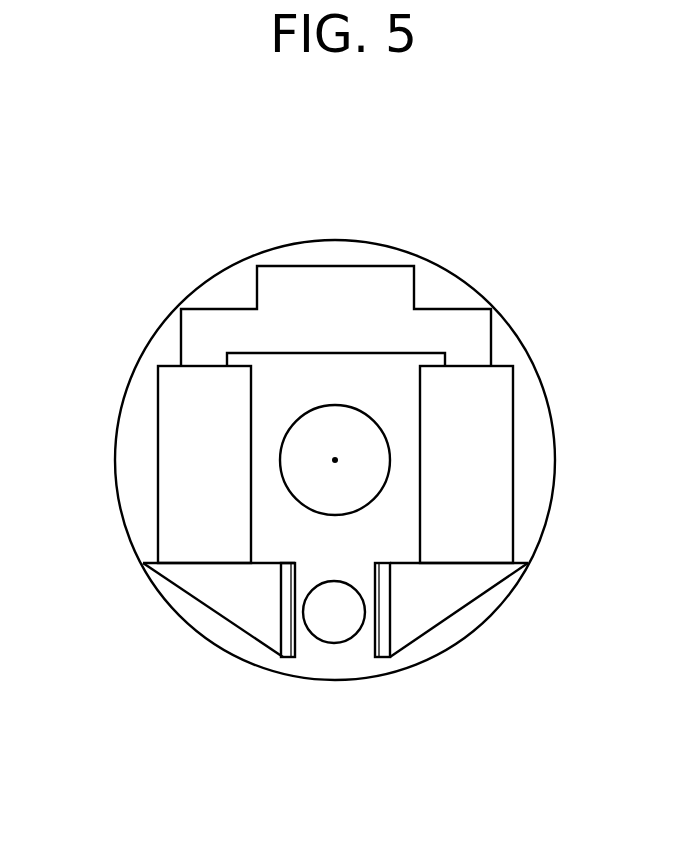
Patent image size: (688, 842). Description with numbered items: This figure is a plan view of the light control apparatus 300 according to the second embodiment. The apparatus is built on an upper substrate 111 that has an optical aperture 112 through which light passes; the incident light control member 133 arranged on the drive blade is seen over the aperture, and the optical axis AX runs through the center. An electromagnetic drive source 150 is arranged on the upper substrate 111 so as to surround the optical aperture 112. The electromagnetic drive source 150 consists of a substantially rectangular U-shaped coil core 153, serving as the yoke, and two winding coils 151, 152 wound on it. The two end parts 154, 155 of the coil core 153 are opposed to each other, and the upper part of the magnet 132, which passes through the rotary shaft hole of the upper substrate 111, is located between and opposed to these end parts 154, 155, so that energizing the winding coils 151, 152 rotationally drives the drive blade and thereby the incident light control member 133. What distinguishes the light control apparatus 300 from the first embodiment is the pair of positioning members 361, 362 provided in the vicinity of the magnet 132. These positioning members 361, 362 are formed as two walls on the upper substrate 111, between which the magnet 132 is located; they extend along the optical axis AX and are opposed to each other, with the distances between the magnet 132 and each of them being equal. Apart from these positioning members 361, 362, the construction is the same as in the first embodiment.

The light control apparatus 300 is at (360, 811).
The upper substrate 111 is at (135, 478).
The optical aperture 112 is at (310, 487).
The electromagnetic drive source 150 is at (372, 216).
The winding coil 151 is at (180, 430).
The winding coil 152 is at (492, 432).
The coil core 153 is at (335, 283).
The end part 154 is at (218, 617).
The end part 155 is at (452, 617).
The incident light control member 133 is at (313, 450).
The magnet 132 is at (333, 628).
The positioning member 361 is at (288, 648).
The positioning member 362 is at (380, 648).
The optical axis AX is at (338, 460).